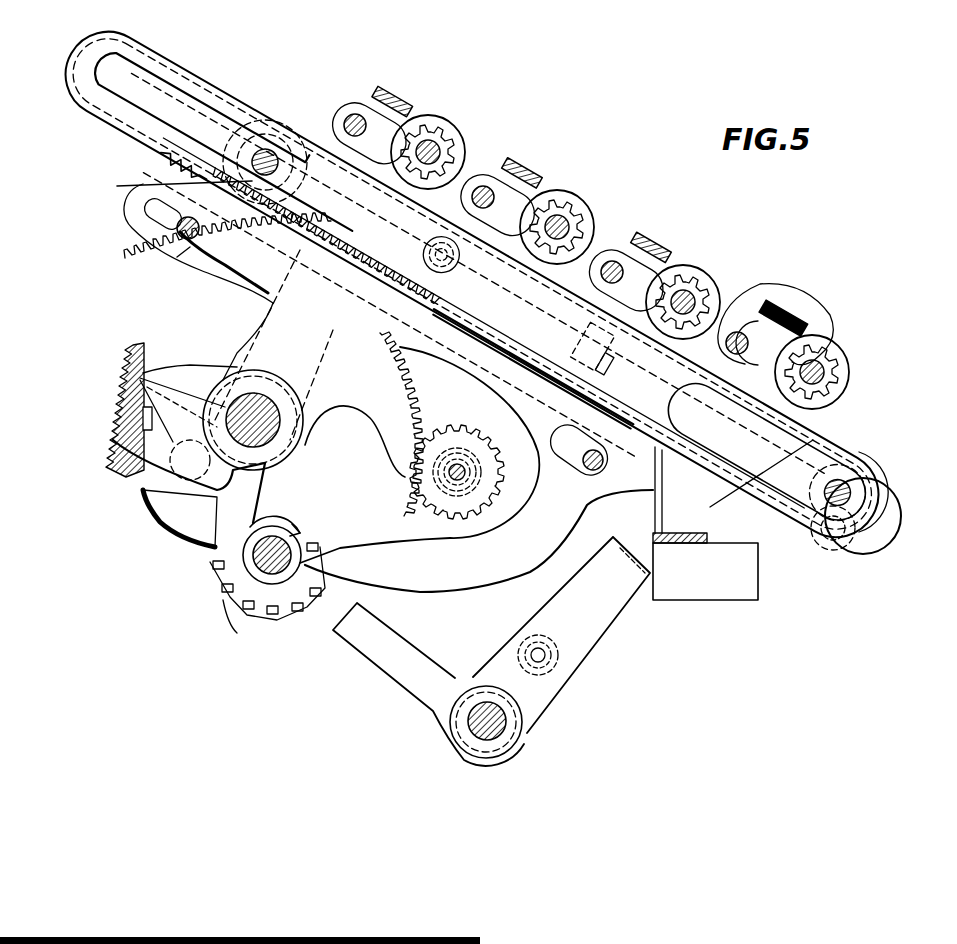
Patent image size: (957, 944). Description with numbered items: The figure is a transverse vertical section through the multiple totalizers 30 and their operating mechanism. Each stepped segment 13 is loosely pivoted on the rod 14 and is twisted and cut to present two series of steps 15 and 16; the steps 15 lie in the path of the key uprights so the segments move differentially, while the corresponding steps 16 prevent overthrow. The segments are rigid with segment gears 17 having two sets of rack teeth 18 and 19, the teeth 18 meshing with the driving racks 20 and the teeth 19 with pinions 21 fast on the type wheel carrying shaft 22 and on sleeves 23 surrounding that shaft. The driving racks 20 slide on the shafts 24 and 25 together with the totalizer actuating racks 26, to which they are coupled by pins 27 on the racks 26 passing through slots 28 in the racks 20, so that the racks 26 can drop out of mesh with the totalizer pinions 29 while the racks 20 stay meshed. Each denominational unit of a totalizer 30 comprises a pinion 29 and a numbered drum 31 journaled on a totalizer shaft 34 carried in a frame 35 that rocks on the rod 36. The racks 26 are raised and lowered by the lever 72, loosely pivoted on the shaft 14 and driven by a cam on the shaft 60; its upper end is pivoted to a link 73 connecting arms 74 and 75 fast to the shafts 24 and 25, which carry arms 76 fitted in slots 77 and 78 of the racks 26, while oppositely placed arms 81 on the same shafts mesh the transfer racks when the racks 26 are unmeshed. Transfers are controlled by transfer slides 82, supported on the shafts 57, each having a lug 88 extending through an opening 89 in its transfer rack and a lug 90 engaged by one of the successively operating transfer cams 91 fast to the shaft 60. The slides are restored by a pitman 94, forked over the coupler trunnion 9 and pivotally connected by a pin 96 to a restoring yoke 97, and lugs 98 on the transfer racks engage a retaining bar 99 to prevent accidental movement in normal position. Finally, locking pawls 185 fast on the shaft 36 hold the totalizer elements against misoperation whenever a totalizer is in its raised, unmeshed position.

The coupler trunnion 9 is at (505, 730).
The stepped segment 13 is at (228, 368).
The rod 14 is at (270, 430).
The steps 15 is at (135, 356).
The steps 16 is at (180, 542).
The segment gear 17 is at (262, 318).
The rack teeth 18 is at (185, 262).
The rack teeth 19 is at (420, 395).
The driving rack 20 is at (185, 176).
The pinion 21 is at (417, 503).
The type wheel carrying shaft 22 is at (466, 465).
The sleeve 23 is at (476, 476).
The shaft 24 is at (268, 150).
The shaft 25 is at (870, 492).
The totalizer actuating rack 26 is at (200, 92).
The pin 27 is at (455, 264).
The slot 28 is at (428, 258).
The totalizer pinion 29 is at (450, 145).
The totalizer 30 is at (455, 158).
The numbered drum 31 is at (438, 128).
The totalizer shaft 34 is at (862, 386).
The frame 35 is at (410, 100).
The rod 36 is at (355, 114).
The shaft 57 is at (178, 230).
The shaft 60 is at (265, 560).
The lever 72 is at (318, 360).
The link 73 is at (300, 262).
The arm 74 is at (290, 205).
The arm 75 is at (828, 545).
The arm 76 is at (248, 140).
The slot 77 is at (140, 110).
The slot 78 is at (742, 486).
The arm 81 is at (288, 178).
The transfer slide 82 is at (166, 187).
The lug 88 is at (582, 332).
The opening 89 is at (596, 358).
The lug 90 is at (306, 545).
The transfer cam 91 is at (262, 620).
The pitman 94 is at (388, 680).
The pin 96 is at (552, 658).
The restoring yoke 97 is at (612, 626).
The lug 98 is at (645, 436).
The retaining bar 99 is at (653, 518).
The locking pawl 185 is at (790, 300).